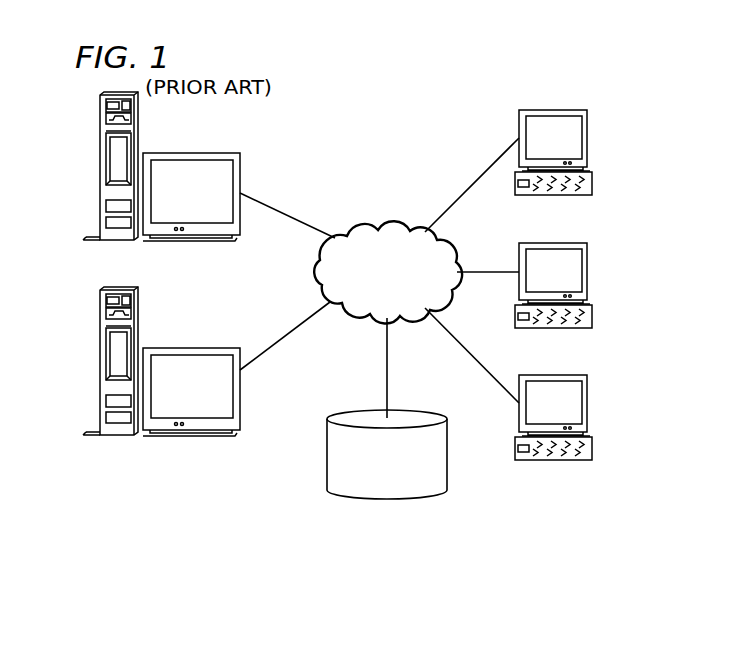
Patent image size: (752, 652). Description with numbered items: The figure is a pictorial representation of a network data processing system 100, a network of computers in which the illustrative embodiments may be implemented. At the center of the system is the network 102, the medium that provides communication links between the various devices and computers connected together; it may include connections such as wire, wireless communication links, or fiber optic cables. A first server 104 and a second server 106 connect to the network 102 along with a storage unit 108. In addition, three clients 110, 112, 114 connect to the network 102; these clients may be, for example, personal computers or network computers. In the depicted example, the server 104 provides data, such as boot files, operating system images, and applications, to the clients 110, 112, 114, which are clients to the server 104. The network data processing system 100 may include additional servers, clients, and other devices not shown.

The network data processing system 100 is at (436, 117).
The network 102 is at (360, 225).
The server 104 is at (100, 168).
The server 106 is at (100, 365).
The storage unit 108 is at (372, 498).
The client 110 is at (587, 138).
The client 112 is at (587, 272).
The client 114 is at (587, 403).